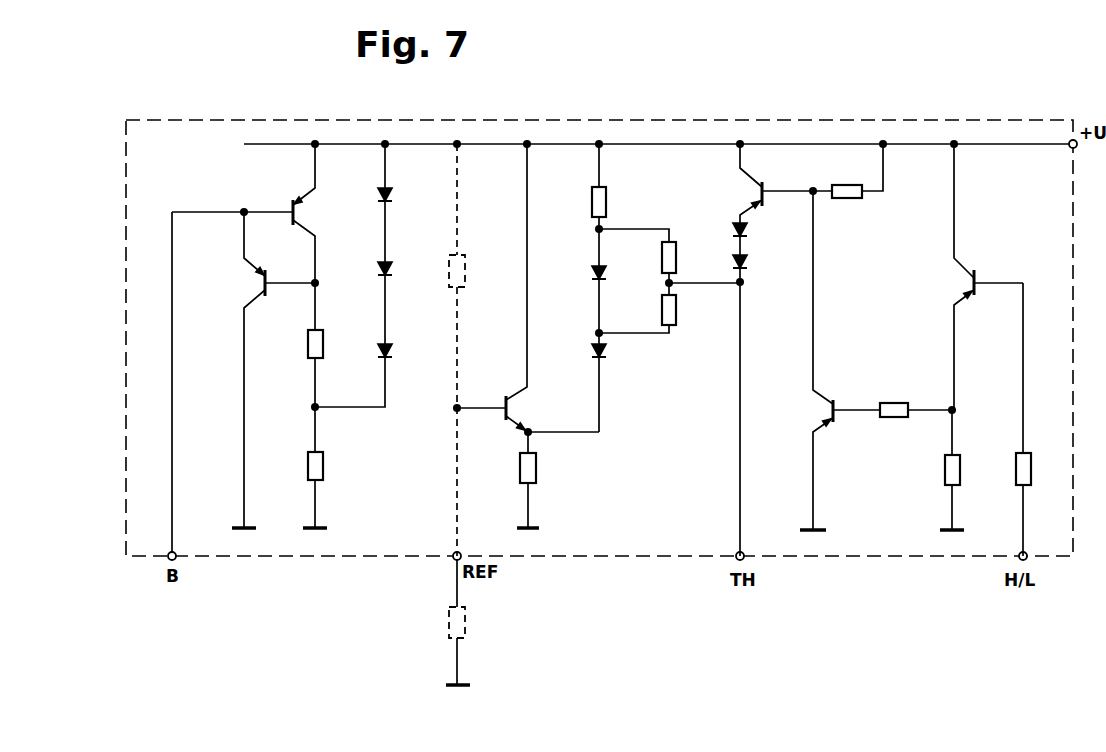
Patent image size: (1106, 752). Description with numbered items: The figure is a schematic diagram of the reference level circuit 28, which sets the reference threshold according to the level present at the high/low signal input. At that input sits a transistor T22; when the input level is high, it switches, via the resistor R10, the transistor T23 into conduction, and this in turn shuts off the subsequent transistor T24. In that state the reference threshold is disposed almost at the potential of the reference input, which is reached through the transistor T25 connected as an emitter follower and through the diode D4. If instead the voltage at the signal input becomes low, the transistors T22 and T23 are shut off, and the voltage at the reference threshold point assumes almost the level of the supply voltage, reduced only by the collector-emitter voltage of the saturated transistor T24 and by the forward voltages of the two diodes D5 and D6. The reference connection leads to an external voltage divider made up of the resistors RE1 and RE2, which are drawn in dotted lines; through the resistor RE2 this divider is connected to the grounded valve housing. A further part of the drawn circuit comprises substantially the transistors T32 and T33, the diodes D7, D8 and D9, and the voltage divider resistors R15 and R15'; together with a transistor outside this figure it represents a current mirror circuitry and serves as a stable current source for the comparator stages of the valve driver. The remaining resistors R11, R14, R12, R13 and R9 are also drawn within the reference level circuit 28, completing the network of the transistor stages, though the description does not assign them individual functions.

The reference level circuit 28 is at (782, 124).
The transistor T32 is at (286, 207).
The transistor T33 is at (268, 292).
The voltage divider resistor R15 is at (335, 345).
The voltage divider resistor R15' is at (334, 467).
The diode D7 is at (392, 199).
The diode D8 is at (392, 273).
The diode D9 is at (392, 355).
The external voltage divider resistor RE1 is at (465, 271).
The external voltage divider resistor RE2 is at (474, 627).
The transistor T25 is at (504, 403).
The resistor R11 is at (536, 467).
The resistor R14 is at (606, 201).
The resistor R12 is at (676, 257).
The resistor R13 is at (676, 310).
The diode D4 is at (606, 355).
The transistor T24 is at (768, 188).
The diode D5 is at (747, 232).
The diode D6 is at (747, 264).
The transistor T23 is at (838, 402).
The resistor R10 is at (898, 417).
The transistor T22 is at (978, 272).
The resistor R9 is at (960, 470).